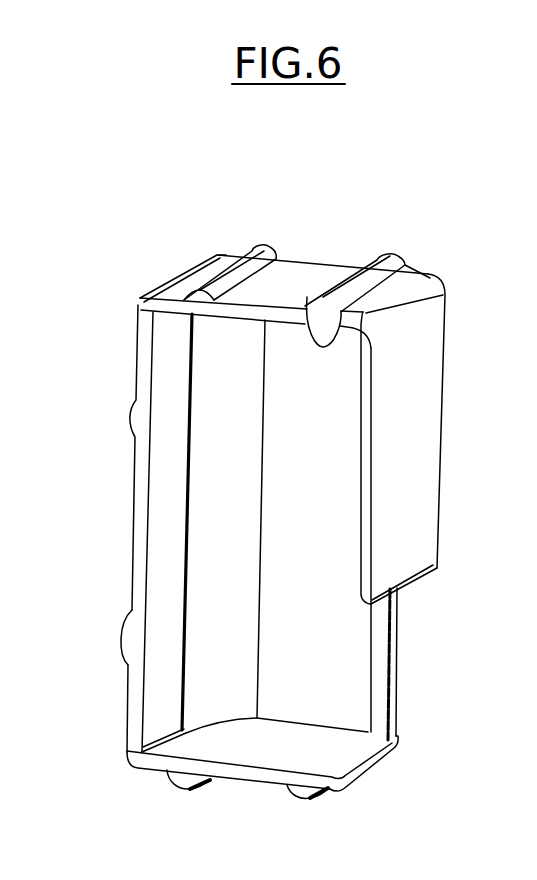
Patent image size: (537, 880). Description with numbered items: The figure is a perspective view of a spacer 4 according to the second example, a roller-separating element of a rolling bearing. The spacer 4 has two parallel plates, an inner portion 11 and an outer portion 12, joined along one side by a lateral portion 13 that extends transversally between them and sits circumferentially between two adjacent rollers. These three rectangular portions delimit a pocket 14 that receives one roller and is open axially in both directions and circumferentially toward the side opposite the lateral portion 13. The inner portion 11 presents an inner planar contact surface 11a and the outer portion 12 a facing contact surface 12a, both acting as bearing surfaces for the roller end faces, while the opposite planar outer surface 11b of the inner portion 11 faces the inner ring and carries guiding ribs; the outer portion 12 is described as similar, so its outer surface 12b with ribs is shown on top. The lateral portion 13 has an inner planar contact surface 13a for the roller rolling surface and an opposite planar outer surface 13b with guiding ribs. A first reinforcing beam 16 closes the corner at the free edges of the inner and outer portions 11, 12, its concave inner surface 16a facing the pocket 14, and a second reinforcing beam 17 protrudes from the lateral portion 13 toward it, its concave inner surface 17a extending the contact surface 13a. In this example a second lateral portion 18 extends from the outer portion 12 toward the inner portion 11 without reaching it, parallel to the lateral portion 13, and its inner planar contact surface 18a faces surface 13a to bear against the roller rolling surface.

The spacer 4 is at (187, 220).
The inner portion 11 is at (275, 795).
The inner planar contact surface 11a is at (243, 750).
The planar outer surface 11b is at (229, 779).
The outer portion 12 is at (306, 260).
The inner planar contact surface 12a is at (333, 335).
The top rib 12b is at (267, 282).
The lateral portion 13 is at (124, 528).
The inner planar contact surface 13a is at (149, 529).
The planar outer surface 13b is at (128, 604).
The pocket 14 is at (337, 603).
The first reinforcing beam 16 is at (411, 673).
The concave inner surface 16a is at (384, 700).
The second reinforcing beam 17 is at (225, 461).
The concave inner surface 17a is at (203, 511).
The second lateral portion 18 is at (428, 483).
The inner planar contact surface 18a is at (362, 523).